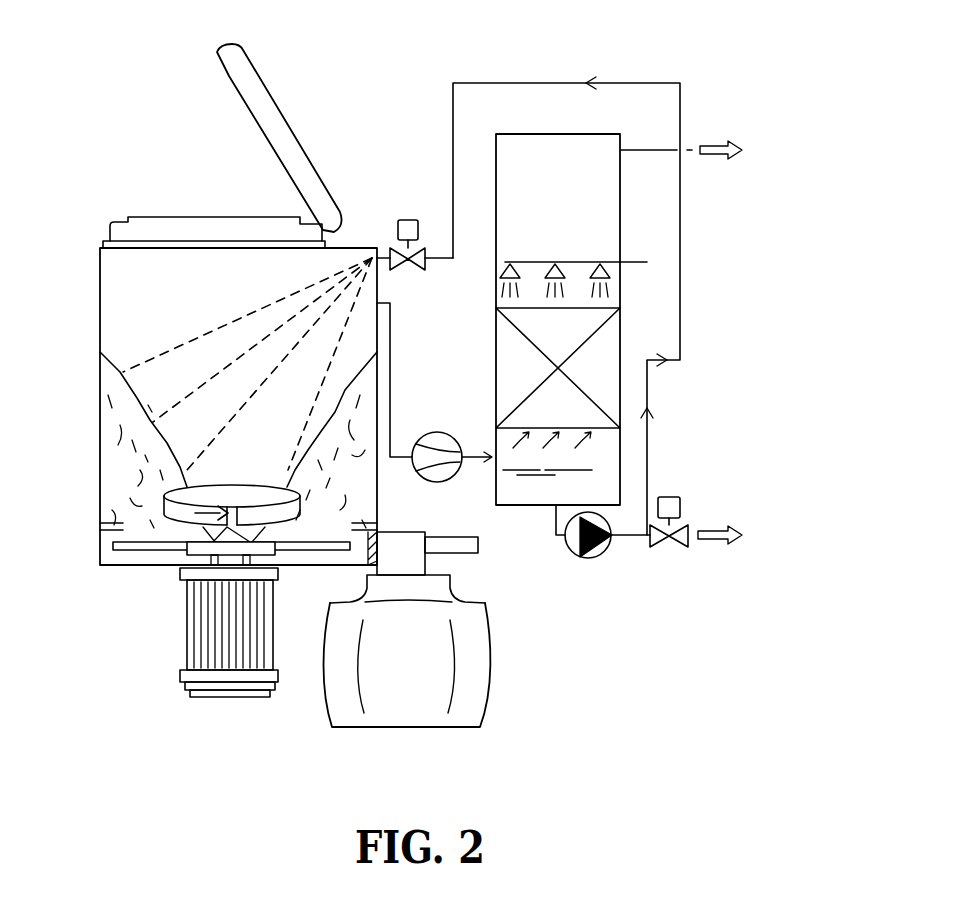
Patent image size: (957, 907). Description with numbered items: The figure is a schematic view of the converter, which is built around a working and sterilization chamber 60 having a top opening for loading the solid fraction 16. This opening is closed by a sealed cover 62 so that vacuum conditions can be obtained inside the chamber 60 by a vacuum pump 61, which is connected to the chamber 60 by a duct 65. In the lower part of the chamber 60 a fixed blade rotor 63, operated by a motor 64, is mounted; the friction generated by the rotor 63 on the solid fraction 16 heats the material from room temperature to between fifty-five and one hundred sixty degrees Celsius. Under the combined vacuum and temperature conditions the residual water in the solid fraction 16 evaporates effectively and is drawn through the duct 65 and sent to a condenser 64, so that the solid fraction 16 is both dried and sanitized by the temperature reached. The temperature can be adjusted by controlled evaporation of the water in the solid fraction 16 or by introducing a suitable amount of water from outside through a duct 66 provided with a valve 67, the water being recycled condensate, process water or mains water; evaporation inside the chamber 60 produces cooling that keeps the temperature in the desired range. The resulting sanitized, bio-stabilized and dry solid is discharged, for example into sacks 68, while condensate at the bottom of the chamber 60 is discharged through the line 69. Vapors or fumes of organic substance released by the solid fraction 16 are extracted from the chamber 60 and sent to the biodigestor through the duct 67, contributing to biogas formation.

The solid fraction 16 is at (108, 457).
The working and sterilization chamber 60 is at (180, 293).
The vacuum pump 61 is at (435, 443).
The sealed cover 62 is at (250, 70).
The fixed blade rotor 63 is at (142, 545).
The motor 64 is at (200, 648).
The duct 65 is at (390, 347).
The duct 66 is at (680, 232).
The valve 67 is at (407, 225).
The sacks 68 is at (473, 628).
The line 69 is at (711, 522).